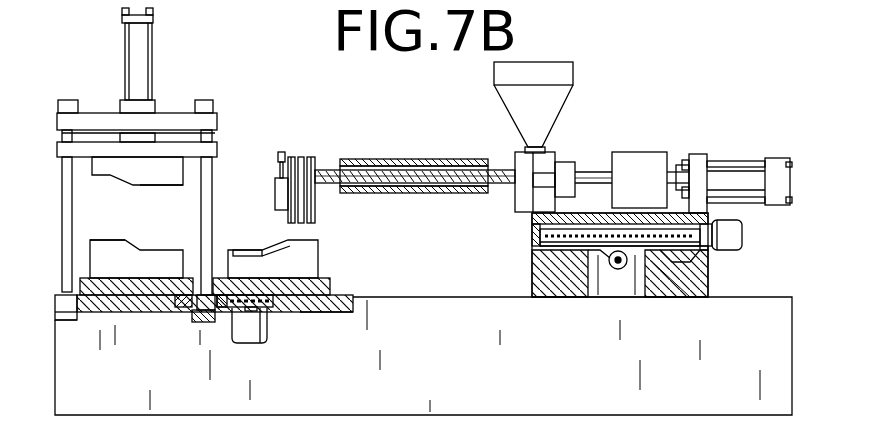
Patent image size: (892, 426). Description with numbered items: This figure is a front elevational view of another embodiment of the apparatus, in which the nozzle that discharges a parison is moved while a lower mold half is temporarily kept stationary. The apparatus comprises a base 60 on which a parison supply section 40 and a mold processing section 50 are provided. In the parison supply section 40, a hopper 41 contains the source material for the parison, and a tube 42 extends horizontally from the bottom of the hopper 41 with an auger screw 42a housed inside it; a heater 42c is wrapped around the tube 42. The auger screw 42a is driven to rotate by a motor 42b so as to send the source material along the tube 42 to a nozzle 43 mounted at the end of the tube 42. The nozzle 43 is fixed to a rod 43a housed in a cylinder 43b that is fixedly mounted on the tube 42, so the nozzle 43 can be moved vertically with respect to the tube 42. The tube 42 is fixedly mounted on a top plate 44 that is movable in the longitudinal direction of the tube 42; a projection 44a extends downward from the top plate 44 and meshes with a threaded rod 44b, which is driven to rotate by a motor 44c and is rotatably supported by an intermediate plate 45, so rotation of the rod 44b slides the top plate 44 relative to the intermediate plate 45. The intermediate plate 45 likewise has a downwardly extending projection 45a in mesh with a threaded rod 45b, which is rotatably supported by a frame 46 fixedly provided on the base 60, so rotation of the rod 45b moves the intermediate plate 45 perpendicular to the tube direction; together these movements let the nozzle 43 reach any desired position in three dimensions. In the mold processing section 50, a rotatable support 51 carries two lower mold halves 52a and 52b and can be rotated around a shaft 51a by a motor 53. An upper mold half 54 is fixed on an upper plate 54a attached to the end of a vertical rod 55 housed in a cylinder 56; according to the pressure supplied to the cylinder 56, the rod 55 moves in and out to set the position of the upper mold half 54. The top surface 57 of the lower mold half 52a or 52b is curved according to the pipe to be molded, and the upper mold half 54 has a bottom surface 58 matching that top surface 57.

The parison supply section 40 is at (590, 98).
The hopper 41 is at (497, 70).
The tube 42 is at (420, 192).
The auger screw 42a is at (437, 168).
The motor 42b is at (641, 160).
The heater 42c is at (360, 160).
The nozzle 43 is at (305, 196).
The rod 43a is at (277, 163).
The cylinder 43b is at (278, 193).
The top plate 44 is at (530, 217).
The projection 44a is at (700, 257).
The threaded rod 44b is at (540, 232).
The motor 44c is at (728, 233).
The intermediate plate 45 is at (700, 279).
The projection 45a is at (622, 272).
The threaded rod 45b is at (608, 258).
The frame 46 is at (700, 303).
The mold processing section 50 is at (215, 93).
The rotatable support 51 is at (118, 290).
The shaft 51a is at (206, 229).
The lower mold half 52a is at (310, 263).
The lower mold half 52b is at (163, 258).
The motor 53 is at (250, 343).
The upper mold half 54 is at (100, 168).
The upper plate 54a is at (62, 146).
The vertical rod 55 is at (135, 136).
The cylinder 56 is at (137, 40).
The top surface 57 is at (125, 246).
The bottom surface 58 is at (170, 186).
The base 60 is at (402, 298).